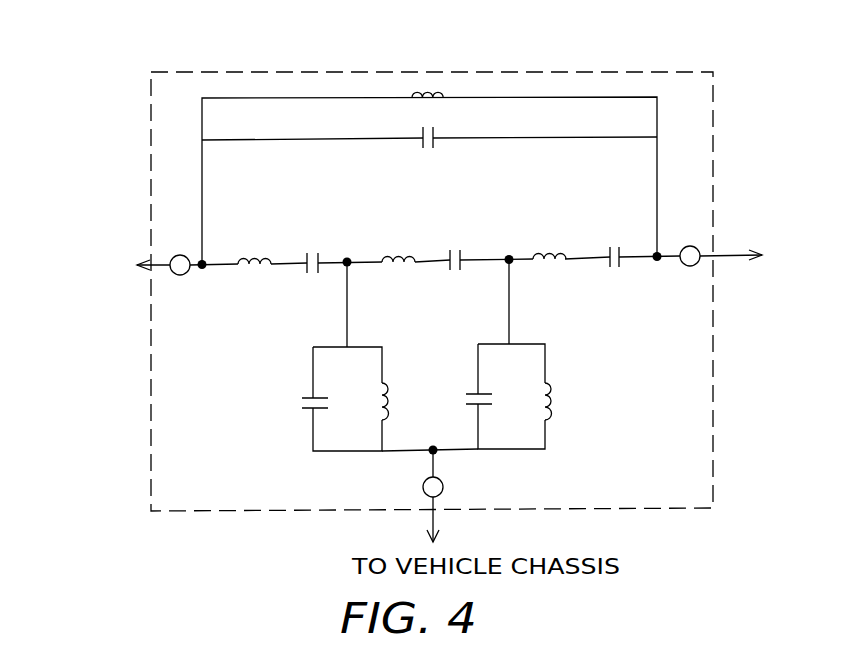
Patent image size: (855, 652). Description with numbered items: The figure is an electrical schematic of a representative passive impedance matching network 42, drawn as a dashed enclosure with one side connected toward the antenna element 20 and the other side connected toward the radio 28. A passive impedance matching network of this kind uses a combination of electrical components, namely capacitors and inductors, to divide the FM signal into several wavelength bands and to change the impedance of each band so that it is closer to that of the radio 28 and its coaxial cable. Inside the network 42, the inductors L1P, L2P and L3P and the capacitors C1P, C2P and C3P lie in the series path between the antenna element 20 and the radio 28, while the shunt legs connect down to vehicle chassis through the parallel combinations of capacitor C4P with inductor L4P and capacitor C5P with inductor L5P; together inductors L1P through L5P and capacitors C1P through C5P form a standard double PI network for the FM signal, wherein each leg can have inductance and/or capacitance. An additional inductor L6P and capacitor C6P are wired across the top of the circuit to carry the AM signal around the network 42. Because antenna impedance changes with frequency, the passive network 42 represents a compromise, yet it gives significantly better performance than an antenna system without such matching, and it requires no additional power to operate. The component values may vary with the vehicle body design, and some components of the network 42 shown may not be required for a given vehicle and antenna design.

The inductor L1P is at (243, 269).
The inductor L2P is at (393, 266).
The inductor L3P is at (543, 263).
The inductor L4P is at (390, 398).
The inductor L5P is at (551, 395).
The additional inductor L6P is at (427, 91).
The capacitor C1P is at (305, 258).
The capacitor C2P is at (448, 256).
The capacitor C3P is at (607, 254).
The capacitor C4P is at (304, 412).
The capacitor C5P is at (472, 410).
The additional capacitor C6P is at (435, 143).
The antenna element 20 is at (103, 276).
The radio 28 is at (765, 239).
The passive impedance matching network 42 is at (477, 291).